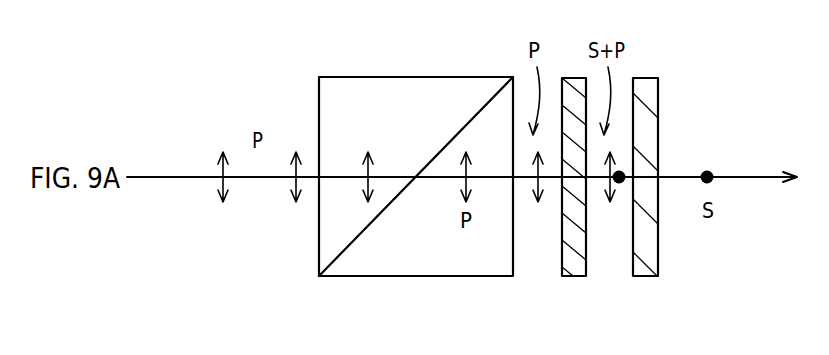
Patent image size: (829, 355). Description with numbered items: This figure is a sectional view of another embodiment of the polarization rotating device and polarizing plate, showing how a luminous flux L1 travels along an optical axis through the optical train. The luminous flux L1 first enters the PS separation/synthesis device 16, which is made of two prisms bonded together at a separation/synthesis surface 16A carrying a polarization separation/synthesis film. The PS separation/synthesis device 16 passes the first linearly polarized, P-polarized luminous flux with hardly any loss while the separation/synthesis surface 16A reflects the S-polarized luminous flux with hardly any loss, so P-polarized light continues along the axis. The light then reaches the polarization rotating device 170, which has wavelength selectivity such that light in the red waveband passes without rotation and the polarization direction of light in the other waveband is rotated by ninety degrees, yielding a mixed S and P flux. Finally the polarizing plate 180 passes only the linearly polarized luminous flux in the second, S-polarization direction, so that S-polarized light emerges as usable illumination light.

The PS separation/synthesis device 16 is at (416, 77).
The separation/synthesis surface 16A is at (341, 257).
The polarization rotating device 170 is at (573, 78).
The polarizing plate 180 is at (646, 78).
The light beam L1 is at (151, 178).